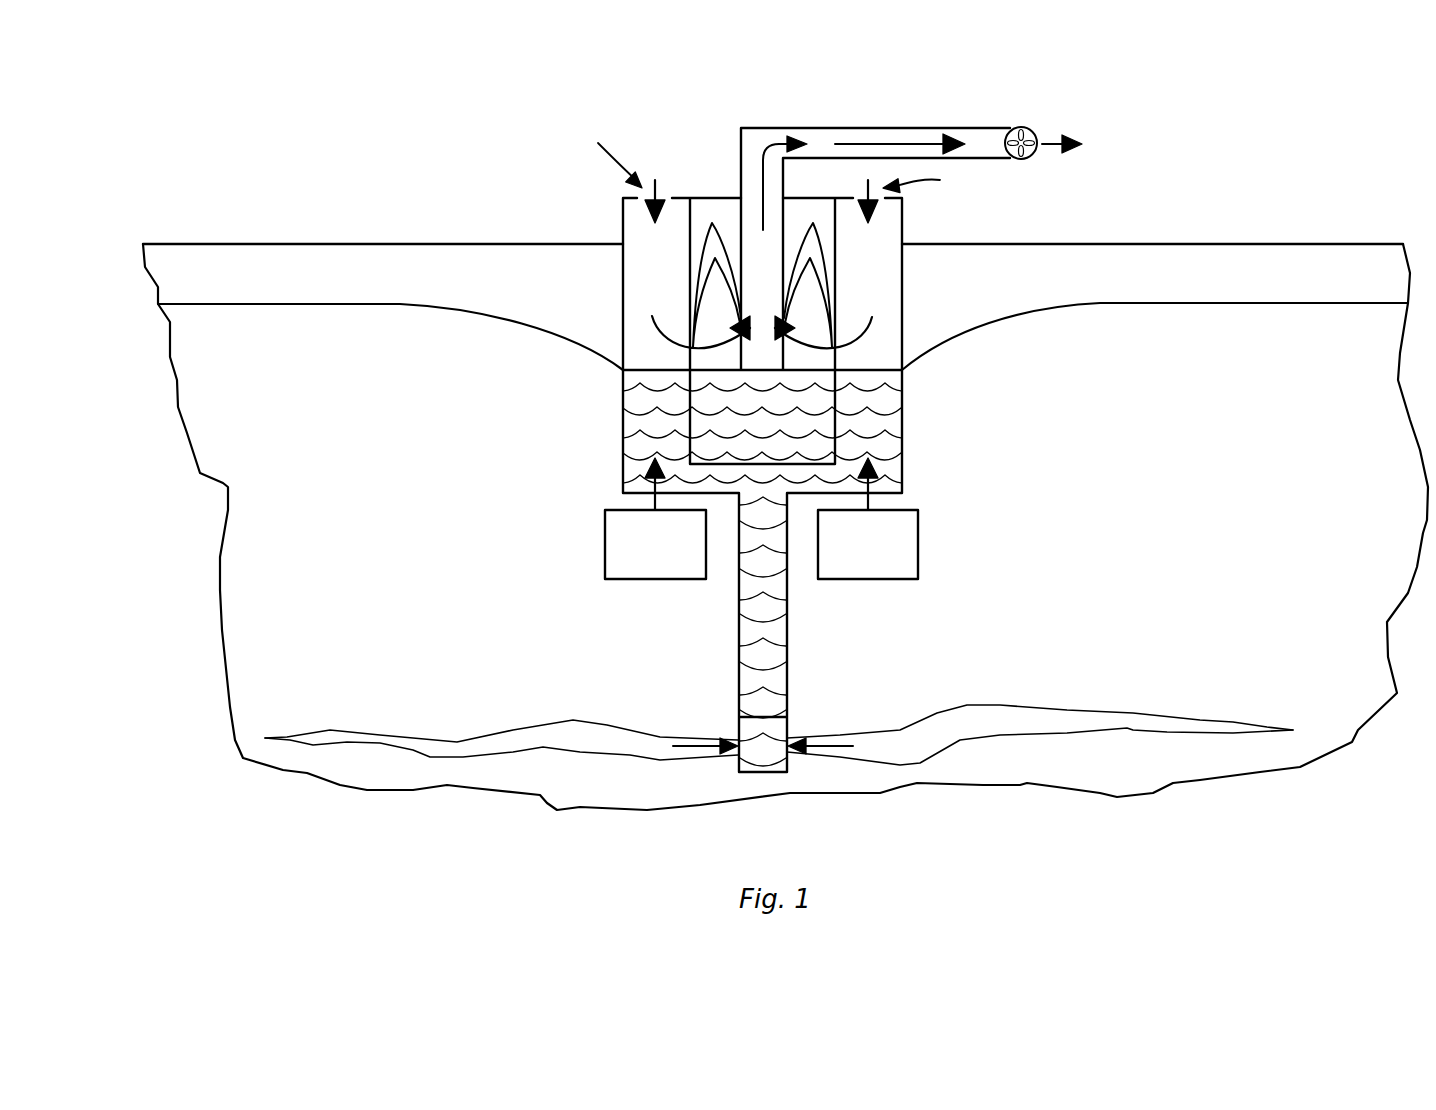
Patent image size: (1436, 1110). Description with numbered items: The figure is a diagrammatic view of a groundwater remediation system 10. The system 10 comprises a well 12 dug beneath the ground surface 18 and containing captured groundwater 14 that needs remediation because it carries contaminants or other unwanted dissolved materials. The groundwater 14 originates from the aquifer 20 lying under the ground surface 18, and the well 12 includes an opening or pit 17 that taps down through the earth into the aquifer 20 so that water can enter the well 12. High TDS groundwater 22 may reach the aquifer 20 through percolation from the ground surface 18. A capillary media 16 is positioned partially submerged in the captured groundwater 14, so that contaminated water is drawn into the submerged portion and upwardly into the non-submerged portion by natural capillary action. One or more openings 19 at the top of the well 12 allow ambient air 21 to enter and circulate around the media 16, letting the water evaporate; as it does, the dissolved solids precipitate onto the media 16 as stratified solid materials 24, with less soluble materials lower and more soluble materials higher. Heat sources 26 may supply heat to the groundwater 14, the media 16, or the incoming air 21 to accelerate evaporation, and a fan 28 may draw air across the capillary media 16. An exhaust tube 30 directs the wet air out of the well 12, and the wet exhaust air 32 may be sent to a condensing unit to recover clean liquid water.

The groundwater remediation system 10 is at (741, 70).
The well 12 is at (903, 456).
The captured groundwater 14 is at (875, 415).
The capillary media 16 is at (691, 255).
The well opening 17 is at (777, 728).
The ground surface 18 is at (243, 243).
The openings 19 is at (770, 154).
The aquifer 20 is at (325, 303).
The ambient air 21 is at (656, 180).
The high TDS groundwater 22 is at (940, 712).
The precipitated solid materials 24 is at (817, 243).
The heat source 26 is at (605, 521).
The fan 28 is at (1032, 132).
The exhaust tube 30 is at (840, 126).
The wet exhaust air 32 is at (1080, 152).